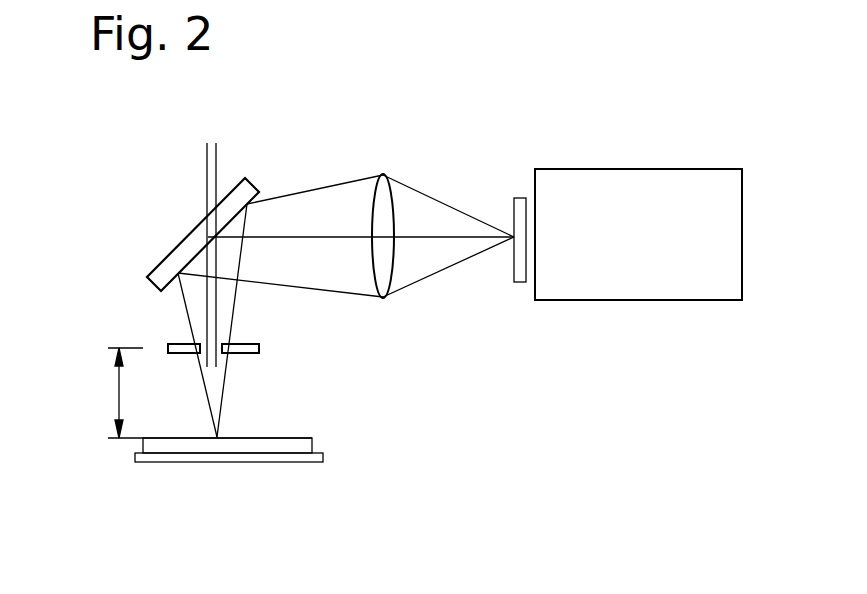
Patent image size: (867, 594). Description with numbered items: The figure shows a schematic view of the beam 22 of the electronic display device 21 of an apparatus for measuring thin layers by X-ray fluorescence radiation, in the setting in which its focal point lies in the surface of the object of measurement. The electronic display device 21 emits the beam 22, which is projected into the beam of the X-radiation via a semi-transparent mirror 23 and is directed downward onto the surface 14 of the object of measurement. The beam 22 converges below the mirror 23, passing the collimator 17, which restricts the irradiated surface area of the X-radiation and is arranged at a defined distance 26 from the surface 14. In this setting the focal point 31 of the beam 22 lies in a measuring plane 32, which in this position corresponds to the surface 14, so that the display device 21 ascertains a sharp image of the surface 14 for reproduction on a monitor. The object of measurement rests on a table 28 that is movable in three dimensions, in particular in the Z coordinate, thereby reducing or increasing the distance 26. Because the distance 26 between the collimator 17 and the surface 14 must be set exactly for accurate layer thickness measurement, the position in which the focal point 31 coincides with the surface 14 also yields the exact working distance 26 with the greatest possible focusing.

The surface 14 is at (297, 437).
The collimator 17 is at (262, 348).
The electronic display device 21 is at (688, 182).
The beam 22 is at (314, 176).
The semi-transparent mirror 23 is at (177, 258).
The distance 26 is at (119, 392).
The table 28 is at (142, 458).
The focal point 31 is at (222, 435).
The measuring plane 32 is at (168, 437).